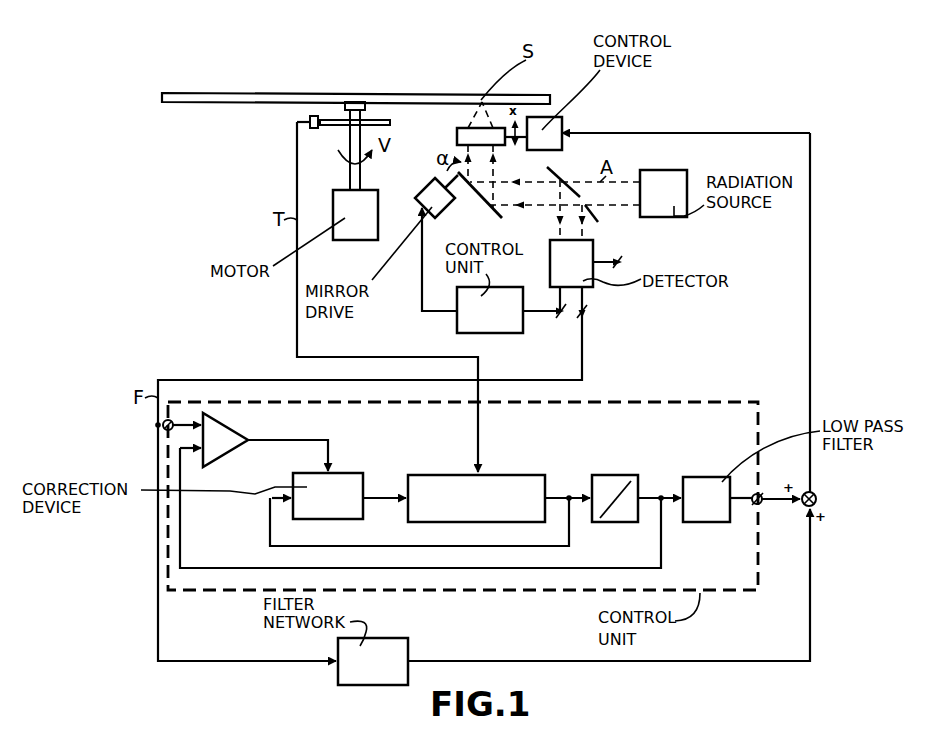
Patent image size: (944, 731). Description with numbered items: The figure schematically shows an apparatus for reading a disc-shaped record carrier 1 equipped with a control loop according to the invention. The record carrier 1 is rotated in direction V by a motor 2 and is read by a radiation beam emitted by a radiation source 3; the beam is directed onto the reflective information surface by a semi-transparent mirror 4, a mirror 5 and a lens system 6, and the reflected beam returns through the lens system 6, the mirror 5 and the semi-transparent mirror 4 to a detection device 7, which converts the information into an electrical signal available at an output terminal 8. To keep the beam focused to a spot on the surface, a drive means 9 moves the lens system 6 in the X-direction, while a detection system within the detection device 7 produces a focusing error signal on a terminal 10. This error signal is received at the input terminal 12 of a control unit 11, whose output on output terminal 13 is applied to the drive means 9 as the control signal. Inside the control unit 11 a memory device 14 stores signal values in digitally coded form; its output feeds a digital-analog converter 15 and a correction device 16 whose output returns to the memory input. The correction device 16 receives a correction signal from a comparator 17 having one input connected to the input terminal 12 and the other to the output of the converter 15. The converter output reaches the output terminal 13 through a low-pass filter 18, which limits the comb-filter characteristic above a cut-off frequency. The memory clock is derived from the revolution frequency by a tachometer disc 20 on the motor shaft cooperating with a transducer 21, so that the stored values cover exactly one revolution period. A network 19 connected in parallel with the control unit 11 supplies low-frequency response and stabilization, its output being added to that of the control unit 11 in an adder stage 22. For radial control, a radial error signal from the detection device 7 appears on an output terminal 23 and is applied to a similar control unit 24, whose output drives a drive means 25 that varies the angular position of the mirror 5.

The disc-shaped record carrier 1 is at (238, 100).
The motor 2 is at (358, 240).
The radiation source 3 is at (687, 182).
The semi-transparent mirror 4 is at (549, 164).
The mirror 5 is at (485, 203).
The lens system 6 is at (457, 137).
The detection device 7 is at (594, 243).
The output terminal 8 is at (616, 261).
The drive means 9 is at (563, 120).
The terminal 10 is at (588, 318).
The control unit 11 is at (477, 592).
The input terminal 12 is at (165, 430).
The output terminal 13 is at (760, 493).
The memory device 14 is at (512, 475).
The digital-analog converter 15 is at (610, 475).
The correction device 16 is at (345, 473).
The comparator 17 is at (237, 436).
The low-pass filter 18 is at (700, 477).
The network 19 is at (361, 685).
The tachometer disc 20 is at (341, 128).
The transducer 21 is at (308, 118).
The adder stage 22 is at (816, 499).
The output terminal 23 is at (561, 319).
The control unit 24 is at (511, 334).
The drive means 25 is at (424, 208).